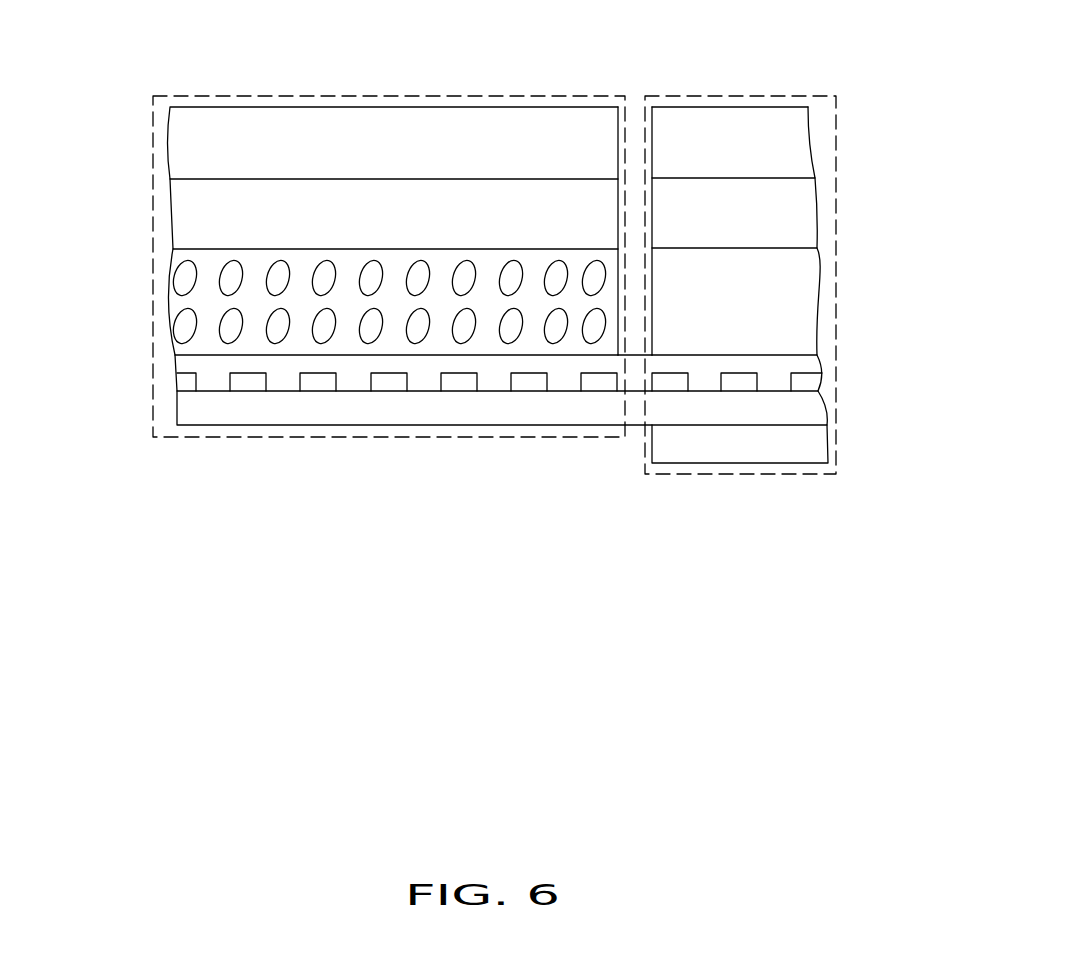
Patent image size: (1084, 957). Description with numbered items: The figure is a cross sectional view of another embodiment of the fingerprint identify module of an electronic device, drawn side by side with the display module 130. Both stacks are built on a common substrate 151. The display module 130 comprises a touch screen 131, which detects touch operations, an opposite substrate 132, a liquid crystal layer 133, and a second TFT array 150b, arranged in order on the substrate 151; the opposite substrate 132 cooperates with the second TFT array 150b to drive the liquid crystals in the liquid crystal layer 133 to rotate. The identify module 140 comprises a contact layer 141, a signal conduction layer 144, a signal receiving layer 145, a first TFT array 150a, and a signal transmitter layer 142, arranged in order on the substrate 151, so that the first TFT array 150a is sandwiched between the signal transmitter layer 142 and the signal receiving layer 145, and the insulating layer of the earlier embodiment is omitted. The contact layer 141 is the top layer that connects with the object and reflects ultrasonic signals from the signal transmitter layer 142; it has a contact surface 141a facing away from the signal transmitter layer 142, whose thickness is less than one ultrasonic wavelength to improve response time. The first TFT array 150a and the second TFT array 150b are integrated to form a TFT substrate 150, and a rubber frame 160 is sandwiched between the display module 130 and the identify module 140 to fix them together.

The display module 130 is at (272, 95).
The touch screen 131 is at (180, 132).
The opposite substrate 132 is at (183, 208).
The liquid crystal layer 133 is at (185, 298).
The rubber frame 160 is at (636, 122).
The identify module 140 is at (722, 95).
The contact surface 141a is at (783, 107).
The contact layer 141 is at (780, 150).
The signal conduction layer 144 is at (780, 223).
The signal receiving layer 145 is at (780, 307).
The TFT substrate 150 is at (498, 467).
The first thin film transistor array 150a is at (702, 382).
The second TFT array 150b is at (580, 518).
The substrate 151 is at (795, 399).
The signal transmitter layer 142 is at (807, 447).